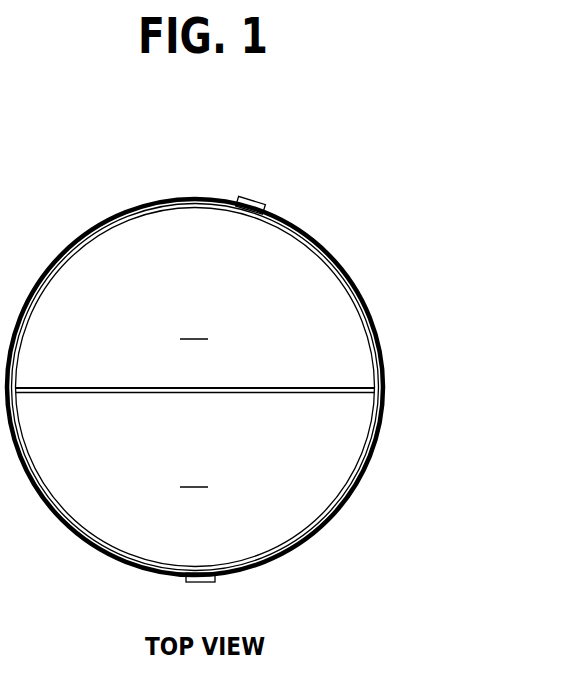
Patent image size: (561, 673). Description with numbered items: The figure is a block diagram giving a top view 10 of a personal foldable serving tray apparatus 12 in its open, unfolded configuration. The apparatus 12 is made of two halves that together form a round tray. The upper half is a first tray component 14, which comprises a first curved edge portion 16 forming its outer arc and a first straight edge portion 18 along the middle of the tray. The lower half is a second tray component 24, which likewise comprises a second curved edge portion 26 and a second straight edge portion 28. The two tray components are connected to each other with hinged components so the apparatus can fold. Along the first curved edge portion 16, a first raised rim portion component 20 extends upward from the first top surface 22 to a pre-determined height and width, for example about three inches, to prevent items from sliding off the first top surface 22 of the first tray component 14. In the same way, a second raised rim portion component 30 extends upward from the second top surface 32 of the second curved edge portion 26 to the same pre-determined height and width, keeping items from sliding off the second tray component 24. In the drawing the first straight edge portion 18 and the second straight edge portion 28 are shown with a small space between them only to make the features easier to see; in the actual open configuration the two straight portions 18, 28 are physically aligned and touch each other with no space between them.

The top view 10 is at (486, 124).
The personal foldable serving tray apparatus 12 is at (147, 202).
The first tray component 14 is at (283, 285).
The first curved edge portion 16 is at (370, 316).
The first straight edge portion 18 is at (240, 387).
The first raised rim portion component 20 is at (378, 347).
The first top surface 22 is at (194, 328).
The second tray component 24 is at (297, 488).
The second curved edge portion 26 is at (333, 517).
The second straight edge portion 28 is at (287, 393).
The second raised rim portion component 30 is at (283, 553).
The second top surface 32 is at (194, 476).